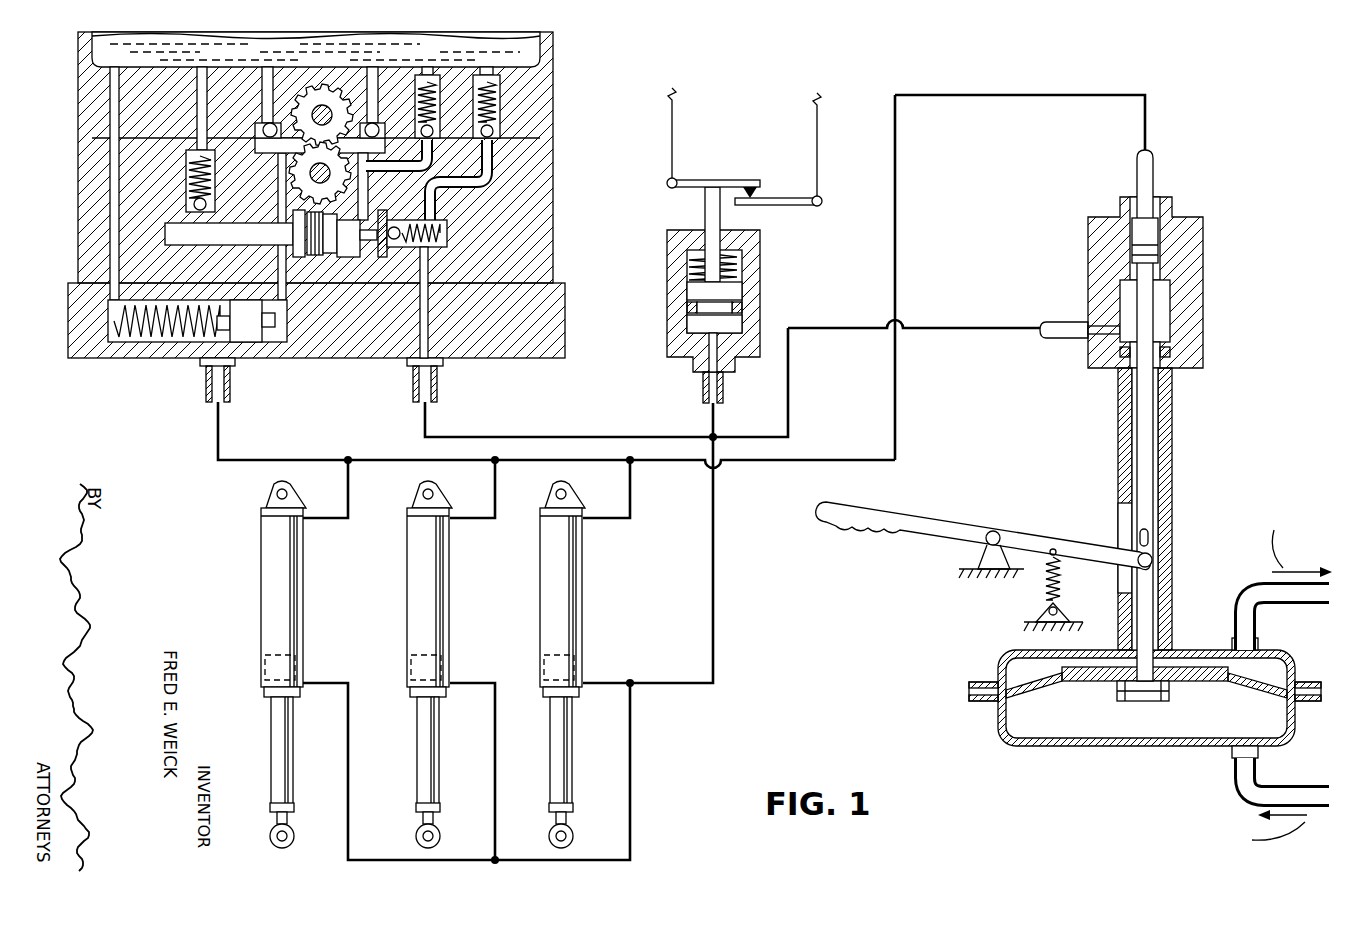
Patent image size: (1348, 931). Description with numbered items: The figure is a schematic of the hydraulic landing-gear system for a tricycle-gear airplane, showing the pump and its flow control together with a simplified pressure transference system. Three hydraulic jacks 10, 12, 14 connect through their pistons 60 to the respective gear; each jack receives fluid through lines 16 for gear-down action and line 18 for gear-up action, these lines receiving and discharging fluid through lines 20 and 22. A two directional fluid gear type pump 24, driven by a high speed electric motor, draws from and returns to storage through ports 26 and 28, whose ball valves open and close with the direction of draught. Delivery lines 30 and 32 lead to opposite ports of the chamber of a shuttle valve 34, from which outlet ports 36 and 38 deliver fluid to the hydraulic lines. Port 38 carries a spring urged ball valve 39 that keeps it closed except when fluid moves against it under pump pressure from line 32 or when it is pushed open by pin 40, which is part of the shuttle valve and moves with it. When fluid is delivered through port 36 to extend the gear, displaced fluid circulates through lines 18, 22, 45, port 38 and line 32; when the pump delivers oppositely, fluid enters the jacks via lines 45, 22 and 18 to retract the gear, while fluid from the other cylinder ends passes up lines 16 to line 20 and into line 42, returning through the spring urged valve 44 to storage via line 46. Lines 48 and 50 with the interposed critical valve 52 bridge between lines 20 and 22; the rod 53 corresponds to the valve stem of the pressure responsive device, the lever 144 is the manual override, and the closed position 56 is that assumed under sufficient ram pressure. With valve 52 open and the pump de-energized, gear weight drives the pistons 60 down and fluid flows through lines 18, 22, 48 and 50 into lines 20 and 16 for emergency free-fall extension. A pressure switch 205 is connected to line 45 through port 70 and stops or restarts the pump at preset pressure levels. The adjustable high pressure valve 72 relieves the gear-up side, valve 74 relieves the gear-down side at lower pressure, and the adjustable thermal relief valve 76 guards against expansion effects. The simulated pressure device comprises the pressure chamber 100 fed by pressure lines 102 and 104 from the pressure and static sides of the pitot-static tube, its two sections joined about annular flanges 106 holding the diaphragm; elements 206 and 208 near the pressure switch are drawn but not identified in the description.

The hydraulic jack 10 is at (268, 580).
The hydraulic jack 12 is at (414, 580).
The hydraulic jack 14 is at (547, 580).
The fluid pressure line 16 is at (348, 500).
The pressure line 18 is at (330, 683).
The line 20 is at (897, 437).
The line 22 is at (697, 560).
The two directional fluid gear type pump 24 is at (326, 100).
The port 26 is at (268, 72).
The port 28 is at (375, 72).
The delivery line 30 is at (290, 185).
The delivery line 32 is at (368, 190).
The shuttle valve 34 is at (336, 262).
The outlet port 36 is at (280, 258).
The outlet port 38 is at (372, 262).
The spring urged ball valve 39 is at (396, 248).
The pin 40 is at (350, 258).
The line 42 is at (216, 440).
The spring urged valve 44 is at (252, 345).
The line 45 is at (578, 437).
The line 46 is at (80, 210).
The bridging line 48 is at (965, 328).
The bridging line 50 is at (1030, 95).
The valve 52 is at (1205, 290).
The rod 53 is at (1150, 440).
The closed position of valve 56 is at (1160, 250).
The piston 60 is at (268, 668).
The port 70 is at (705, 392).
The adjustable high pressure valve 72 is at (432, 78).
The pressure relief valve 74 is at (186, 183).
The adjustable thermal relief valve 76 is at (500, 105).
The pressure chamber 100 is at (1000, 665).
The pressure line 102 is at (1245, 790).
The pressure line 104 is at (1243, 600).
The annular flange 106 is at (950, 712).
The lever 144 is at (948, 520).
The pressure switch 205 is at (762, 290).
The handle 206 is at (735, 180).
The arm 208 is at (785, 205).